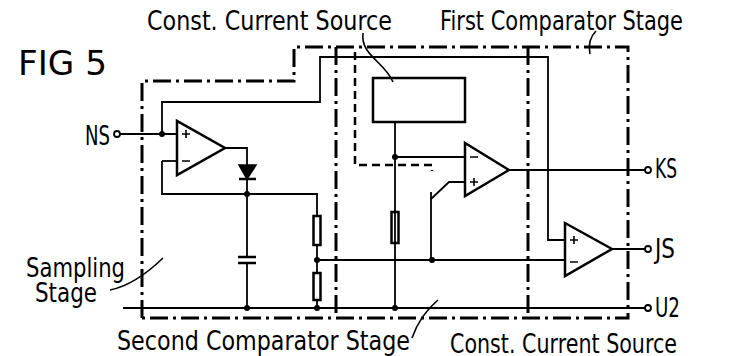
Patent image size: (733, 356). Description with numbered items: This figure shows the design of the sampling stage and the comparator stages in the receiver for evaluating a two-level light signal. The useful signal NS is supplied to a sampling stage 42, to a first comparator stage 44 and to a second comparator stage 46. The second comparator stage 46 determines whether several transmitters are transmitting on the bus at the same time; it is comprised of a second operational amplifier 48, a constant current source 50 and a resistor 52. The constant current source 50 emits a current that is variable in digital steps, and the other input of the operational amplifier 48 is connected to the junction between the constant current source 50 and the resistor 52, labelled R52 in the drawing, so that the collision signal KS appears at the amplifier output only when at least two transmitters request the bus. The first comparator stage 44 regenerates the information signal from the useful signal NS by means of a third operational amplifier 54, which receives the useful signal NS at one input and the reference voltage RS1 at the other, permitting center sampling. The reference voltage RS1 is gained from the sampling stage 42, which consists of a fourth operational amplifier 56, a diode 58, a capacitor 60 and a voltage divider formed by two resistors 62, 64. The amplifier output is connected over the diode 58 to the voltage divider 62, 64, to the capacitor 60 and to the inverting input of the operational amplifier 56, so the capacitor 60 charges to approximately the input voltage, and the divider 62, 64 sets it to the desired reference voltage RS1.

The sampling stage 42 is at (157, 223).
The first comparator stage 44 is at (621, 91).
The second comparator stage 46 is at (350, 50).
The second operational amplifier 48 is at (487, 161).
The constant current source 50 is at (419, 100).
The resistor 52 is at (382, 229).
The third operational amplifier 54 is at (588, 241).
The fourth operational amplifier 56 is at (201, 140).
The diode 58 is at (261, 173).
The capacitor 60 is at (234, 261).
The resistor of voltage divider 62 is at (303, 229).
The resistor of voltage divider 64 is at (303, 288).
The resistor R52 is at (429, 141).
The reference voltage RS1 is at (441, 247).